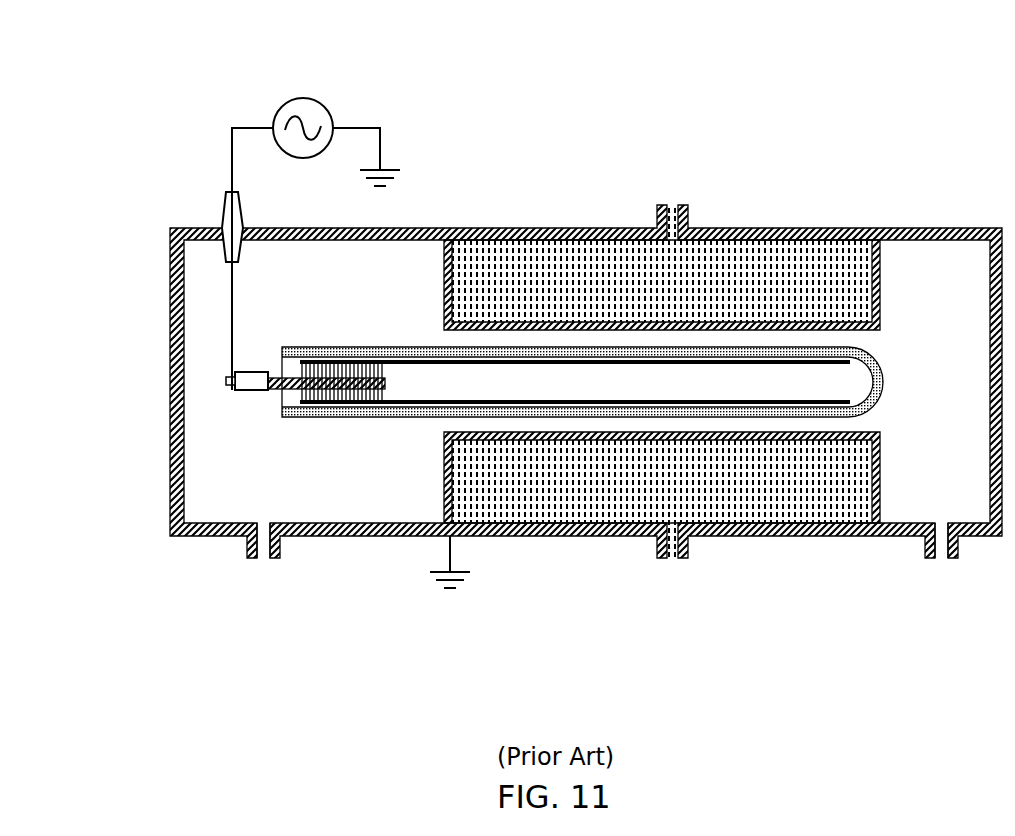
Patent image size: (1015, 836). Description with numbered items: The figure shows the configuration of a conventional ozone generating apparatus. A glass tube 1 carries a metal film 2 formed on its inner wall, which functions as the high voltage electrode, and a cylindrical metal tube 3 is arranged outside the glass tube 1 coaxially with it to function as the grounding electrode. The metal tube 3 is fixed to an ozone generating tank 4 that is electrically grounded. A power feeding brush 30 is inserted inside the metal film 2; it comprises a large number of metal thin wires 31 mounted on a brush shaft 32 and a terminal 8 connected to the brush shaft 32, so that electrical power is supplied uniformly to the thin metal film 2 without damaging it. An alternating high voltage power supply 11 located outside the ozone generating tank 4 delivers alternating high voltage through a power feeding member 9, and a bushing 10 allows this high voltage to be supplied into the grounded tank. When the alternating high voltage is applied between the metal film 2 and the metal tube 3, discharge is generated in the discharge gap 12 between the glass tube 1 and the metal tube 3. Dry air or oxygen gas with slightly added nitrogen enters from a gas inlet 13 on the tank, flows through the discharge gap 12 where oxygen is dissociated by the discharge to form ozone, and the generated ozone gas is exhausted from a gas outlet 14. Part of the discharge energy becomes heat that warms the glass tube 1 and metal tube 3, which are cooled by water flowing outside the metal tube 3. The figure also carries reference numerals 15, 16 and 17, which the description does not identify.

The glass tube 1 is at (513, 352).
The metal film 2 is at (513, 405).
The cylindrical metal tube 3 is at (577, 330).
The ozone generating tank 4 is at (820, 228).
The terminal 8 is at (245, 392).
The power feeding member 9 is at (228, 352).
The bushing 10 is at (222, 216).
The alternating high voltage power supply 11 is at (287, 106).
The discharge gap 12 is at (465, 340).
The gas inlet 13 is at (258, 558).
The gas outlet 14 is at (940, 558).
The lower electrode 15 is at (602, 495).
The lower port 16 is at (680, 558).
The upper port 17 is at (672, 205).
The power feeding brush 30 is at (300, 417).
The metal thin wires 31 is at (355, 417).
The brush shaft 32 is at (268, 392).